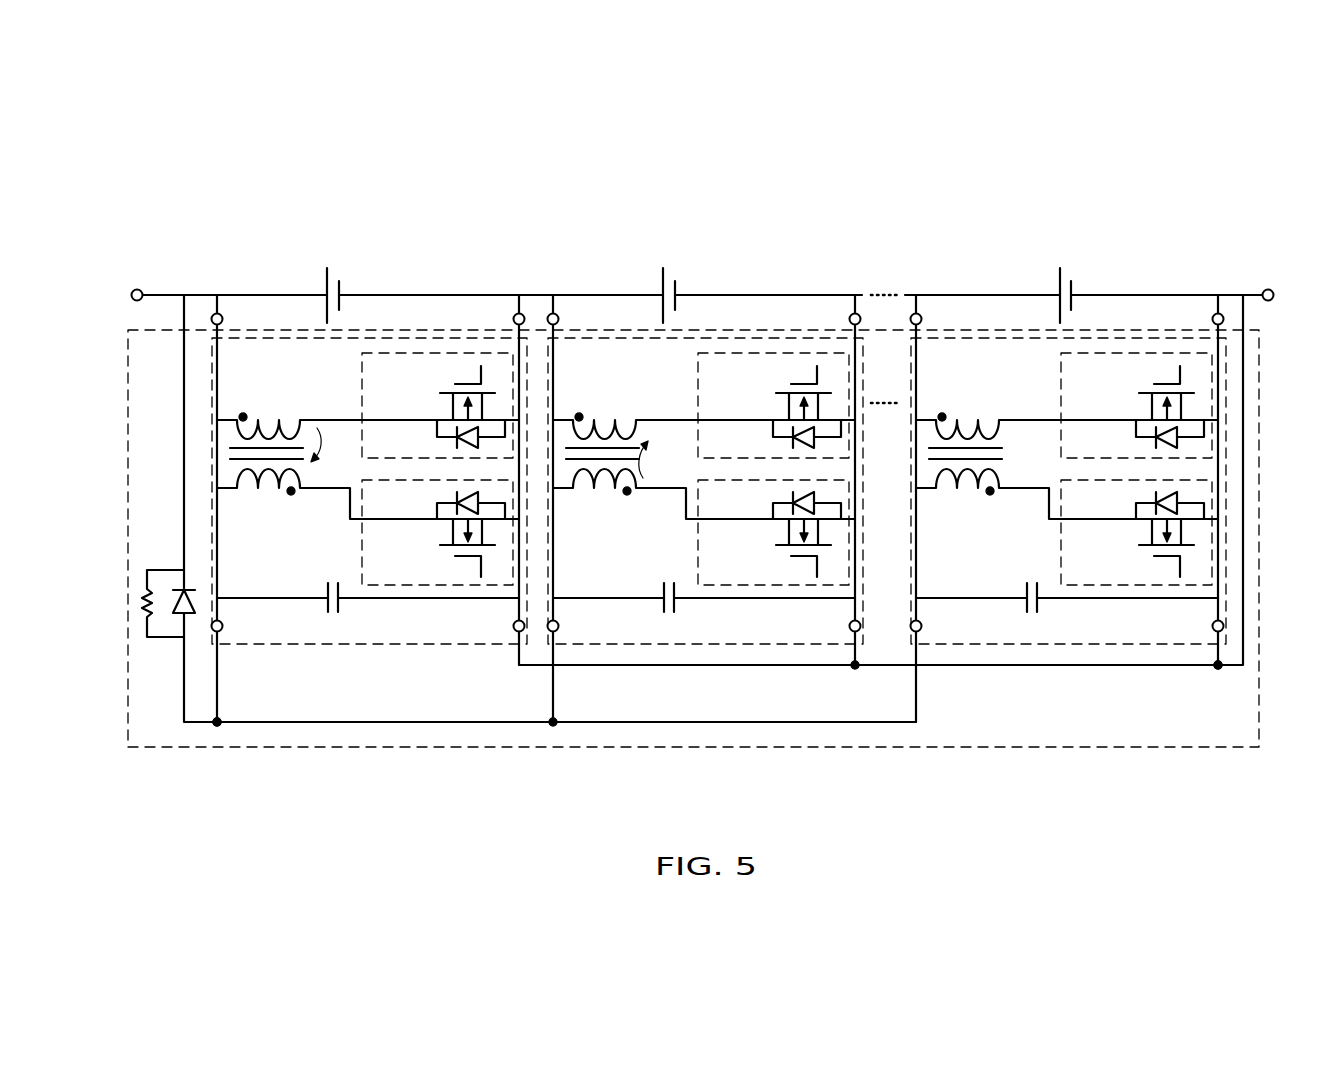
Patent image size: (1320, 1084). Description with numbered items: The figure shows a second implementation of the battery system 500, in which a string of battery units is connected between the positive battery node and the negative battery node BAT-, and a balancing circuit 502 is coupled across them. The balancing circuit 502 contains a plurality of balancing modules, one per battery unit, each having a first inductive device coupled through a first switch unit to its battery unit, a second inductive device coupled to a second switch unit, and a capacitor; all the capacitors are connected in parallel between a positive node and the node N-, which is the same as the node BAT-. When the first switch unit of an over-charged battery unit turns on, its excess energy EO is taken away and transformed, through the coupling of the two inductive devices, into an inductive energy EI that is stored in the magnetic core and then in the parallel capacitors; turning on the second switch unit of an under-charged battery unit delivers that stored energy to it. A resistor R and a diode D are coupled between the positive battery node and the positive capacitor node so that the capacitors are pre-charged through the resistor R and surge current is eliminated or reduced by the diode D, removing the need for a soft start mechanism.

The battery system 500 is at (1128, 184).
The balancing circuit 502 is at (160, 331).
The resistor R is at (163, 604).
The diode D is at (191, 621).
The node N- is at (1221, 681).
The node BAT- is at (1276, 278).
The excess energy EO is at (333, 445).
The inductive energy EI is at (659, 460).